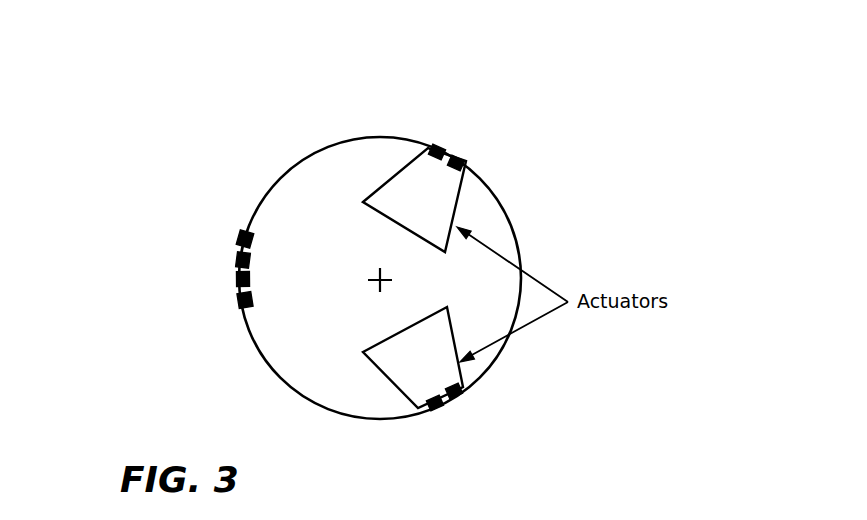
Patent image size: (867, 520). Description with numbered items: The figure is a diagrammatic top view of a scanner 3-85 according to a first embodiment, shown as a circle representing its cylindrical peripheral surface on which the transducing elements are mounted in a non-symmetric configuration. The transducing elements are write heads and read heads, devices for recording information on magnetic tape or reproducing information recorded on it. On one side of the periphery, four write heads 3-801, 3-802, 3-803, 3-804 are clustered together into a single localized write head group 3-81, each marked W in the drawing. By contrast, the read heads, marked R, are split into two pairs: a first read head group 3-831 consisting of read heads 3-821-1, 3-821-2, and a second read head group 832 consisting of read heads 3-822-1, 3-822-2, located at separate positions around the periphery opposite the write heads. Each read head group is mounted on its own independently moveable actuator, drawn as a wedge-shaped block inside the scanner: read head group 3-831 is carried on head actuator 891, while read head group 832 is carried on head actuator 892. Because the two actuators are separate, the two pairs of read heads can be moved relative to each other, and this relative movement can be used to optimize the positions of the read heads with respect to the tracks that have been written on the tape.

The scanner 3-85 is at (614, 236).
The write head group 3-81 is at (201, 266).
The write head 3-801 is at (240, 234).
The write head 3-802 is at (250, 260).
The write head 3-803 is at (250, 277).
The write head 3-804 is at (210, 331).
The head actuator 891 is at (380, 188).
The head actuator 892 is at (384, 373).
The read head group 3-831 is at (503, 112).
The read head 3-821-1 is at (437, 148).
The read head 3-821-2 is at (462, 160).
The read head group 832 is at (482, 429).
The read head 3-822-1 is at (463, 386).
The read head 3-822-2 is at (382, 424).